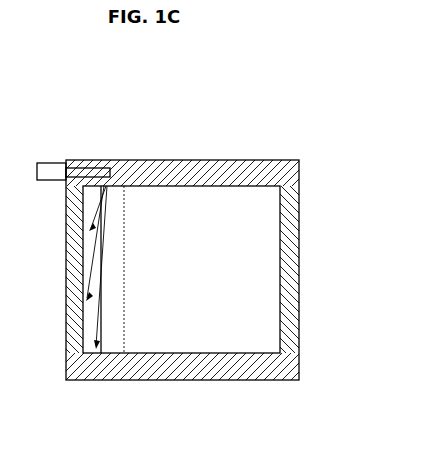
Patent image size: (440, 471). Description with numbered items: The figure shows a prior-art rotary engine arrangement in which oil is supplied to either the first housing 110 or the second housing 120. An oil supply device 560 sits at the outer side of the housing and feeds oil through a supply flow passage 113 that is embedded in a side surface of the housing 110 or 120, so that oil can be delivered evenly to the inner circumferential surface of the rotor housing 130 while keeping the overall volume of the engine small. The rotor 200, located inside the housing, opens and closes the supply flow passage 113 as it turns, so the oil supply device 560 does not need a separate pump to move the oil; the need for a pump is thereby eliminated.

The first housing 110 is at (126, 160).
The supply flow passage 113 is at (88, 165).
The second housing 120 is at (120, 368).
The rotor housing 130 is at (66, 328).
The rotor 200 is at (229, 212).
The oil supply device 560 is at (51, 165).